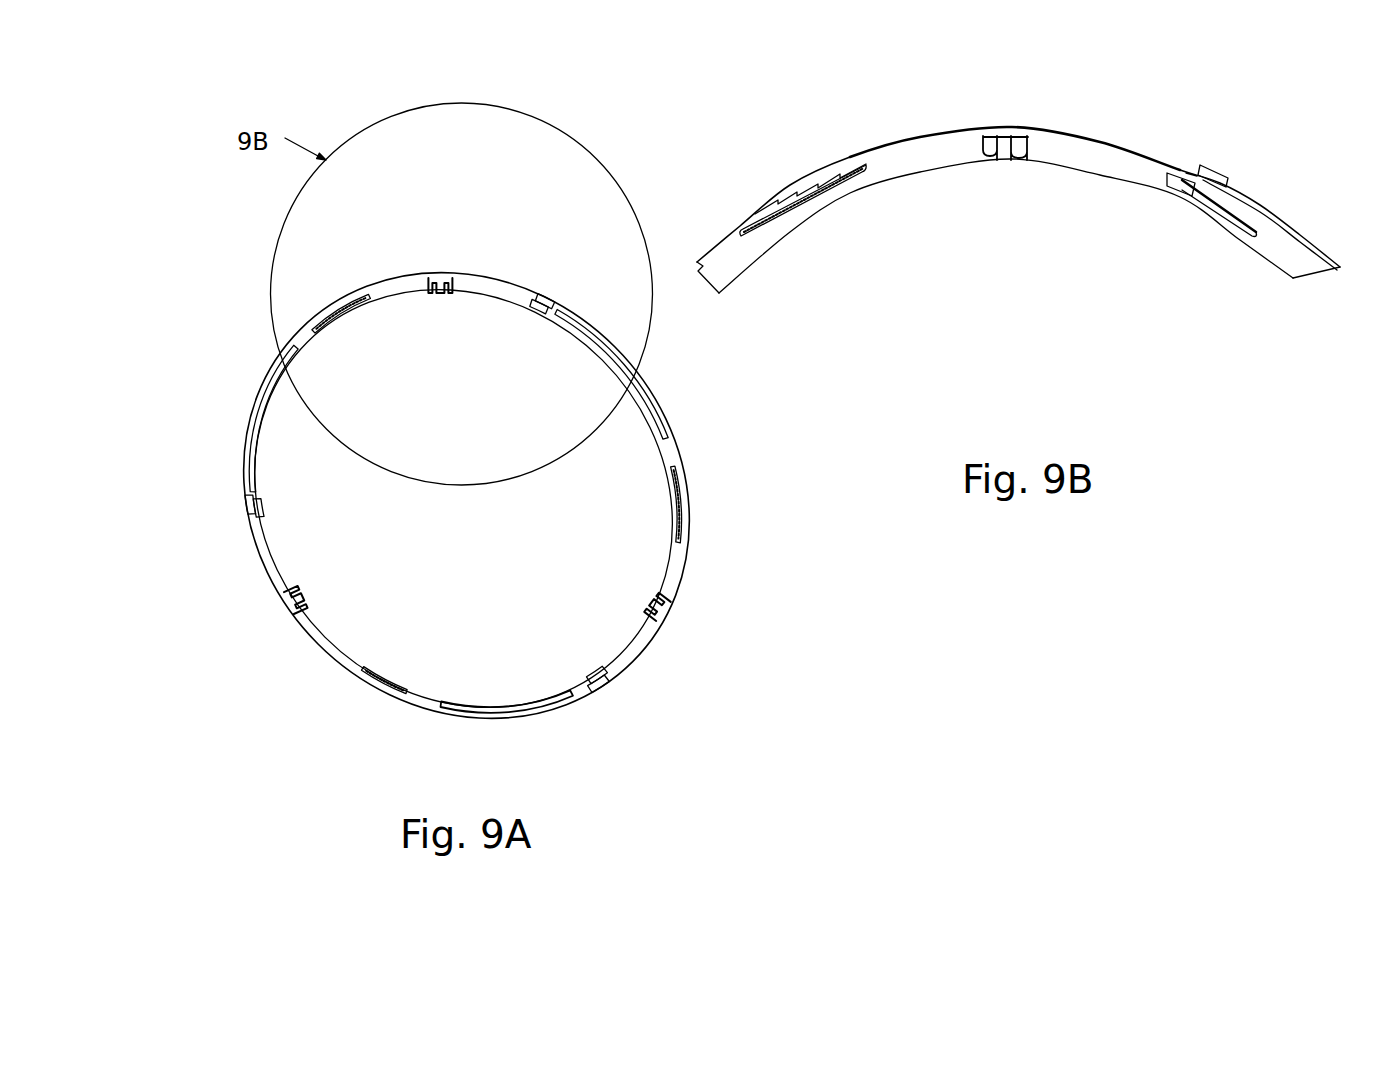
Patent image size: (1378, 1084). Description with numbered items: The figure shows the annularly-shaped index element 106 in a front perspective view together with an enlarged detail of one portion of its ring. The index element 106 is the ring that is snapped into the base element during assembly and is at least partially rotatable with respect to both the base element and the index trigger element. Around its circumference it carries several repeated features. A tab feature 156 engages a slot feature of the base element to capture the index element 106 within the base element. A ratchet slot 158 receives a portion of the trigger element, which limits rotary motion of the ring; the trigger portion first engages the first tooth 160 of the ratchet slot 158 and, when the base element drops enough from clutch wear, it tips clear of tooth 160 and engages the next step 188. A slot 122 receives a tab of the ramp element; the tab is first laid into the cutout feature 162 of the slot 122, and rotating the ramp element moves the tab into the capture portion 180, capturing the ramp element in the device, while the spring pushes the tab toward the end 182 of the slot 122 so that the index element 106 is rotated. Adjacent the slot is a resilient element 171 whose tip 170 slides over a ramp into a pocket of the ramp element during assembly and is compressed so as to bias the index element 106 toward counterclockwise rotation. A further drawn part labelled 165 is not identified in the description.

In FIG. 9A, the annularly-shaped index element 106 is at (691, 578).
In FIG. 9A, the tab feature 156 is at (613, 692).
In FIG. 9B, the tab feature 156 is at (1223, 177).
In FIG. 9A, the ratchet slot 158 is at (363, 683).
In FIG. 9B, the ratchet slot 158 is at (803, 167).
In FIG. 9A, the latch tab 165 is at (618, 681).
In FIG. 9B, the first tooth 160 is at (753, 208).
In FIG. 9B, the step 188 is at (772, 200).
In FIG. 9B, the end of slot 182 is at (1137, 172).
In FIG. 9B, the slot 122 is at (1184, 162).
In FIG. 9B, the capture portion 180 is at (1250, 223).
In FIG. 9B, the resilient element 171 is at (1003, 165).
In FIG. 9B, the tip 170 is at (1022, 165).
In FIG. 9B, the cutout feature 162 is at (1183, 186).